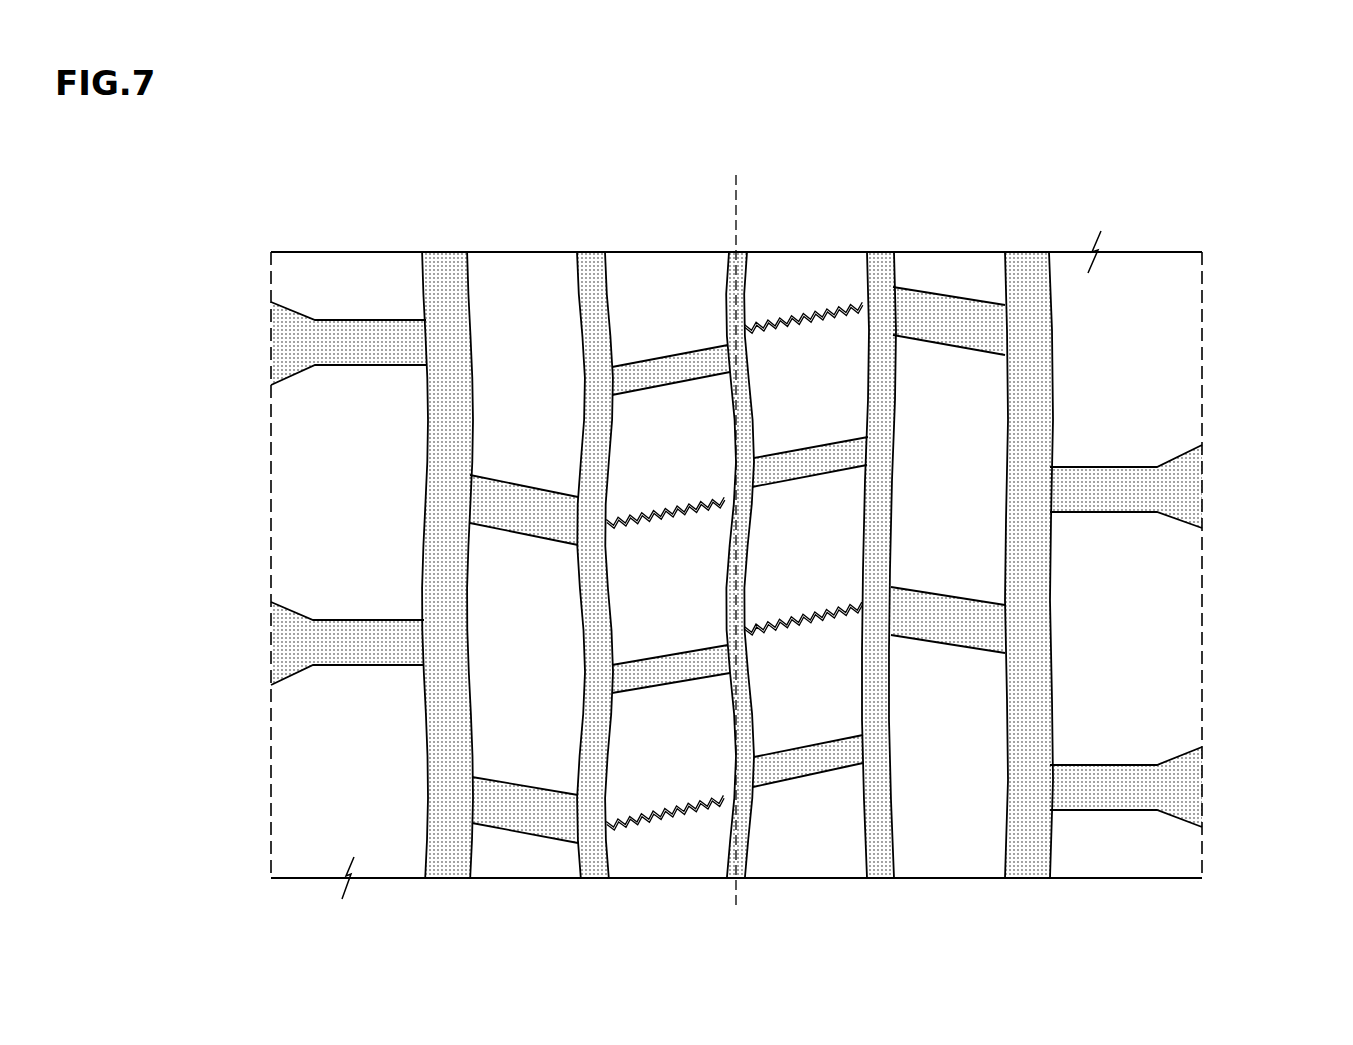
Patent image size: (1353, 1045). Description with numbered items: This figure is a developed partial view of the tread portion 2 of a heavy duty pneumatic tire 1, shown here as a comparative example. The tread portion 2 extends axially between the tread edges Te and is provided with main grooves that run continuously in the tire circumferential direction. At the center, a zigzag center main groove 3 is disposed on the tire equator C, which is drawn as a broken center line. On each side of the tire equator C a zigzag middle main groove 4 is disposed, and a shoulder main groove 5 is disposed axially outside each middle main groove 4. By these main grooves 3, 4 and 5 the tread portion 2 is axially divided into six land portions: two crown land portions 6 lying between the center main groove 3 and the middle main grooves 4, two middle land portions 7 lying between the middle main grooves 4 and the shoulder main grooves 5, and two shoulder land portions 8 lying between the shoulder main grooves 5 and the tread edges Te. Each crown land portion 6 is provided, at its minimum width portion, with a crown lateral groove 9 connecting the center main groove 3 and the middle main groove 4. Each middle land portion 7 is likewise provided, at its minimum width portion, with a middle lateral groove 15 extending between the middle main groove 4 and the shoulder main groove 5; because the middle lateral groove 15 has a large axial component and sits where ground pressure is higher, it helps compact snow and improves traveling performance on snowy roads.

The heavy duty pneumatic tire 1 is at (1281, 172).
The tread portion 2 is at (1218, 205).
The center main groove 3 is at (739, 272).
The middle main groove 4 is at (592, 278).
The shoulder main groove 5 is at (446, 280).
The crown land portion 6 is at (682, 278).
The middle land portion 7 is at (522, 278).
The shoulder land portion 8 is at (347, 392).
The crown lateral groove 9 is at (660, 372).
The middle lateral groove 15 is at (487, 514).
The tire equator C is at (734, 525).
The tread edge Te is at (270, 318).